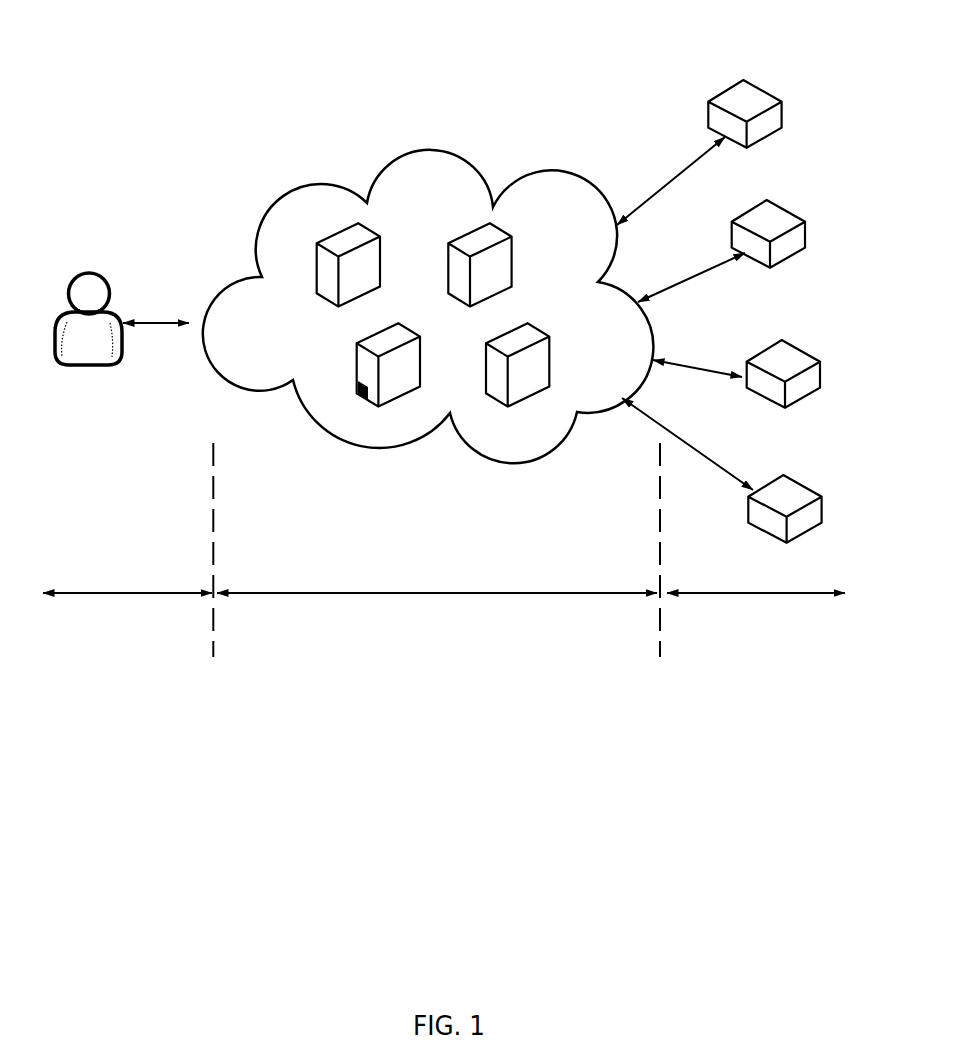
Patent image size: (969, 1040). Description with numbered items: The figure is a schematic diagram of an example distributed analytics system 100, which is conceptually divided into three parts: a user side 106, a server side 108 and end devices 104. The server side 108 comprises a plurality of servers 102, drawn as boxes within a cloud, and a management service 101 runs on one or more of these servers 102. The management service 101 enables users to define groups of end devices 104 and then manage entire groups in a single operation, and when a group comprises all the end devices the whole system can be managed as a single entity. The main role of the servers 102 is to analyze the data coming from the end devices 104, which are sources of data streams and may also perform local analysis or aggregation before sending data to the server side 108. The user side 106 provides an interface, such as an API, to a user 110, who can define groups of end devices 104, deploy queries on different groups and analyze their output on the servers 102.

The distributed analytics system 100 is at (215, 135).
The management service 101 is at (357, 385).
The server 102 is at (365, 230).
The end devices 104 is at (758, 82).
The user side 106 is at (127, 624).
The server side 108 is at (437, 624).
The user 110 is at (88, 367).